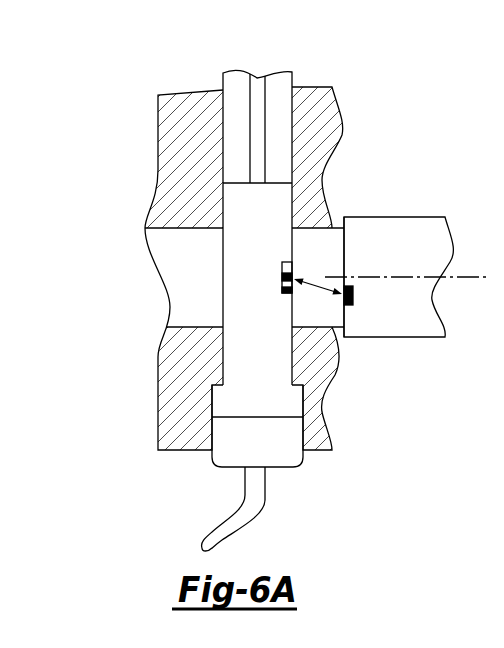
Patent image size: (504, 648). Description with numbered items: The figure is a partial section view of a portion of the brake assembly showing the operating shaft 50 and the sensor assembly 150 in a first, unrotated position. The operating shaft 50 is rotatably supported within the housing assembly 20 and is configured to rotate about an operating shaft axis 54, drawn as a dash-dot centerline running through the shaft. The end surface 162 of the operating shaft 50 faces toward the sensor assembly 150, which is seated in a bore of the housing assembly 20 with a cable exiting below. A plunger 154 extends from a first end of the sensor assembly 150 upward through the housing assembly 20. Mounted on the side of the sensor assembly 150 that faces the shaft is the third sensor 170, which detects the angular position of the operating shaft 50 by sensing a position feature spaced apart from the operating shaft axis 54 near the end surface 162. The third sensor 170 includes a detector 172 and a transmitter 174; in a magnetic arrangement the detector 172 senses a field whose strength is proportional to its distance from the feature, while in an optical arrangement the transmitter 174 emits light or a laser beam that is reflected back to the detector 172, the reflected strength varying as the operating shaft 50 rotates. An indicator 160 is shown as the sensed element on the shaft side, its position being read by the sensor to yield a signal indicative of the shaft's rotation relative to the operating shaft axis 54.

The housing assembly 20 is at (163, 137).
The plunger 154 is at (258, 92).
The sensor assembly 150 is at (277, 474).
The third sensor 170 is at (277, 258).
The detector 172 is at (282, 277).
The transmitter 174 is at (282, 290).
The operating shaft 50 is at (426, 345).
The end surface 162 is at (345, 223).
The indicator 160 is at (355, 295).
The operating shaft axis 54 is at (458, 279).